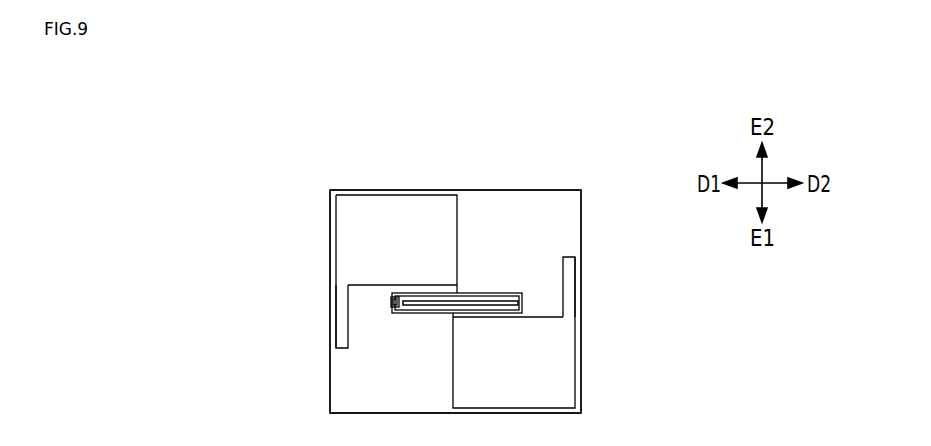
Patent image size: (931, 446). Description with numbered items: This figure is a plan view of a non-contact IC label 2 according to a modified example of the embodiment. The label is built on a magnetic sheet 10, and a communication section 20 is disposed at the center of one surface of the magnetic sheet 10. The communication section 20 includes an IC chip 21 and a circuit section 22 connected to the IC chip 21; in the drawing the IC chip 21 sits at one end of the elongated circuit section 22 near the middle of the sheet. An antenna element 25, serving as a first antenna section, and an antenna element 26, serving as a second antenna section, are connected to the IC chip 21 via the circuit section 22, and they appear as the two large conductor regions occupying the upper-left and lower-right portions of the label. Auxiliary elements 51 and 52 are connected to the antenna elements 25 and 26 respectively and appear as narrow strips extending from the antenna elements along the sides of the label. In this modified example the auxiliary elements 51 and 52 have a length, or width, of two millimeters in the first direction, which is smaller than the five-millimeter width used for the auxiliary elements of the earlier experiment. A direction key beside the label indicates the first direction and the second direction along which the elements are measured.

The non-contact IC label 2 is at (329, 189).
The magnetic sheet 10 is at (329, 396).
The communication section 20 is at (427, 192).
The IC chip 21 is at (391, 302).
The circuit section 22 is at (499, 292).
The antenna element (first antenna section) 25 is at (357, 236).
The antenna element (second antenna section) 26 is at (553, 365).
The auxiliary element 51 is at (342, 331).
The auxiliary element 52 is at (568, 270).